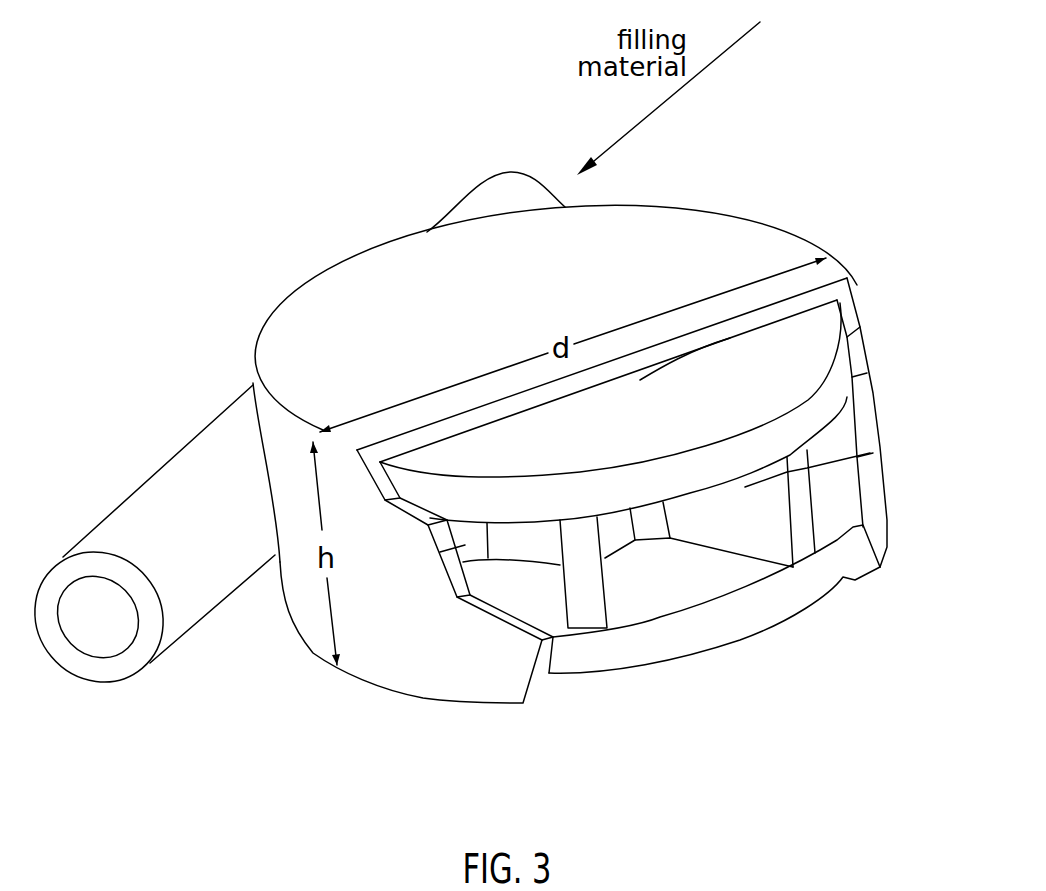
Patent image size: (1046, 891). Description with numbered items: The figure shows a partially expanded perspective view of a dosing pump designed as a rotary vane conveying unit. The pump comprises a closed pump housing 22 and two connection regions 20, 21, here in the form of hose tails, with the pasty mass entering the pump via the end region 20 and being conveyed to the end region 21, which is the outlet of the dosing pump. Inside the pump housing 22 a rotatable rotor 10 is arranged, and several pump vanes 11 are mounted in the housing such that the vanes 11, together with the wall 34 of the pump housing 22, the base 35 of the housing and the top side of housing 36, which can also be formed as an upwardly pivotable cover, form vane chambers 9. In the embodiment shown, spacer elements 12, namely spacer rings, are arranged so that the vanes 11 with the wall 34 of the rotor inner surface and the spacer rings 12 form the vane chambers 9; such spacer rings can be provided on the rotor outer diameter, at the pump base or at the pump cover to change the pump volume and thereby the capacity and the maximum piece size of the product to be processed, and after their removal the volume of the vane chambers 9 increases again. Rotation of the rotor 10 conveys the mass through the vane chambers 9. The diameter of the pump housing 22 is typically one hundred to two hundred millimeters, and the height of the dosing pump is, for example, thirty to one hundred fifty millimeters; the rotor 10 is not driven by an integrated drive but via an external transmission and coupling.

The vane chambers 9 is at (749, 529).
The rotor 10 is at (640, 380).
The pump vanes 11 is at (568, 590).
The spacer elements 12 is at (635, 540).
The connection region 20 is at (512, 183).
The connection region 21 is at (135, 492).
The pump housing 22 is at (391, 238).
The wall 34 is at (441, 553).
The base 35 is at (567, 682).
The top side of housing 36 is at (272, 367).